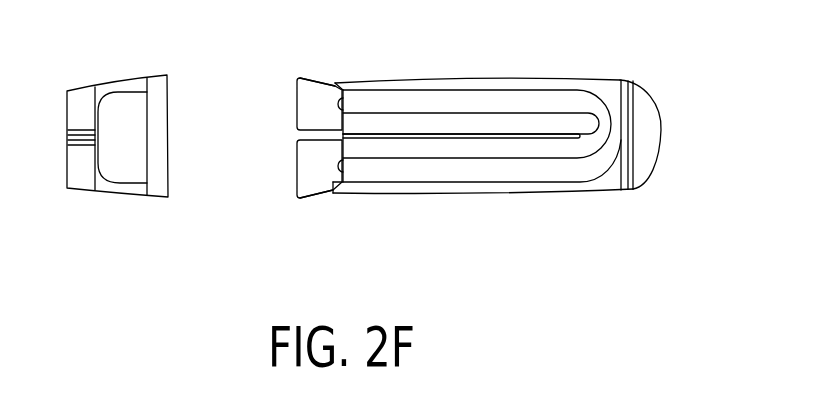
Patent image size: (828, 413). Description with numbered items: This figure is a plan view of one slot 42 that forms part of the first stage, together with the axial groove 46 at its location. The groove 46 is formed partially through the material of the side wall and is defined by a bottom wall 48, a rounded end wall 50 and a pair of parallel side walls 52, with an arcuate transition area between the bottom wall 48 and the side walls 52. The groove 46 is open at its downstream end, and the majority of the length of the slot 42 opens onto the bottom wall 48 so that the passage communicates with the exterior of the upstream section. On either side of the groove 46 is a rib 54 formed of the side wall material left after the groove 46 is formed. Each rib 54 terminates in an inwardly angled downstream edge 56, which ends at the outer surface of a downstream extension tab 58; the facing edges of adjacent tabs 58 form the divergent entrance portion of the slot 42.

The slot 42 is at (541, 136).
The axial groove 46 is at (591, 106).
The bottom wall 48 is at (503, 123).
The end wall 50 is at (625, 136).
The side walls 52 is at (458, 94).
The rib 54 is at (407, 87).
The inwardly angled downstream edge 56 is at (335, 83).
The downstream extension tab 58 is at (318, 107).